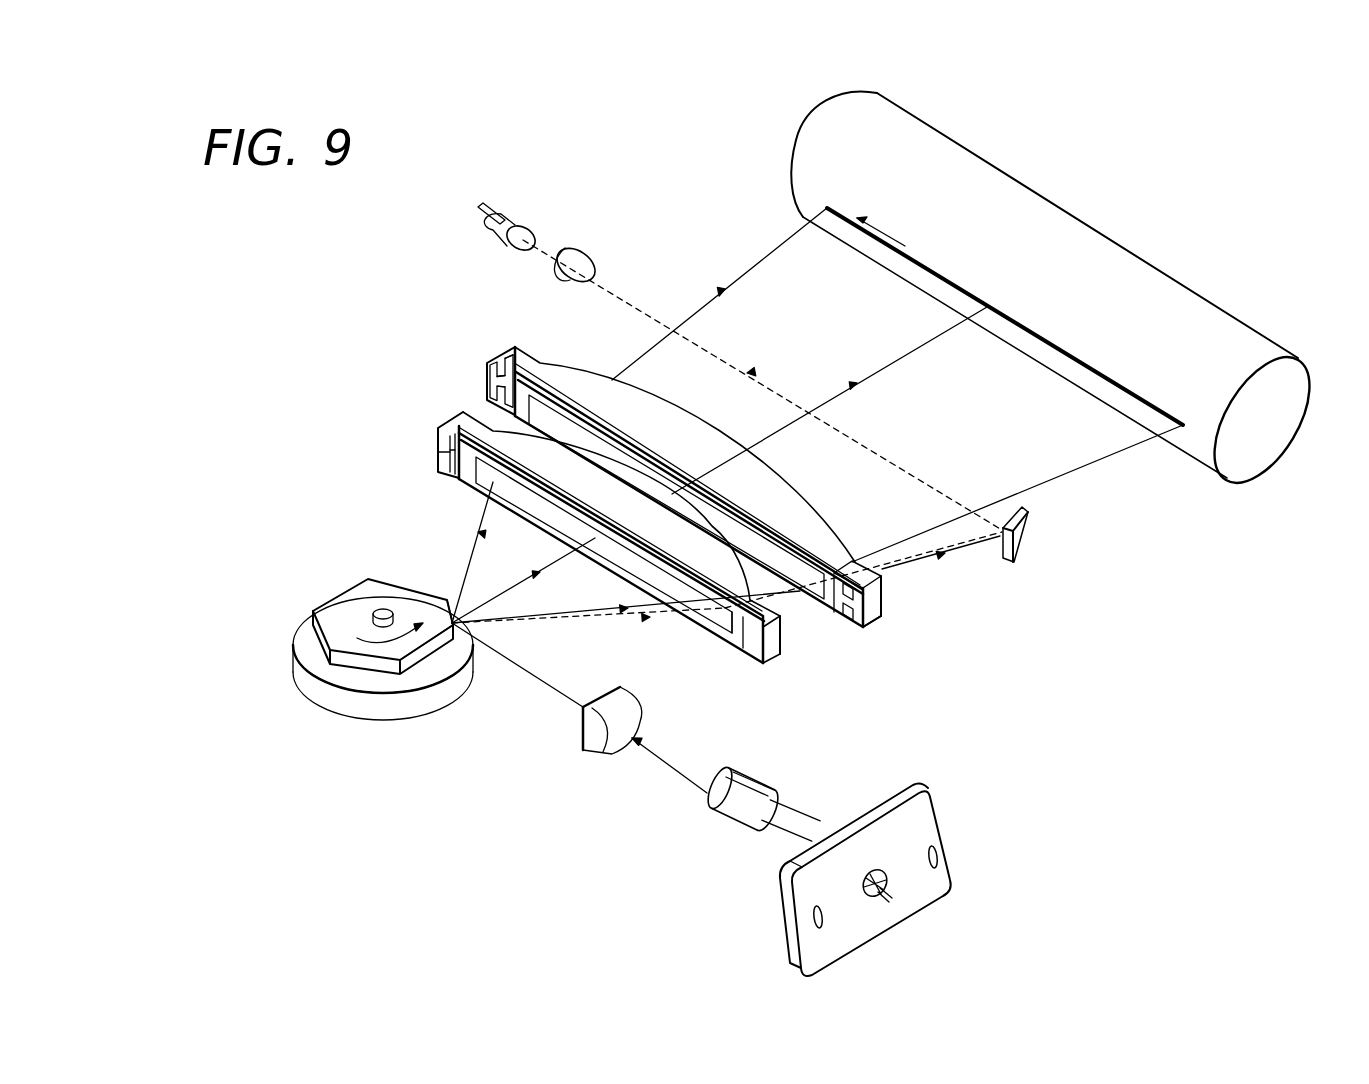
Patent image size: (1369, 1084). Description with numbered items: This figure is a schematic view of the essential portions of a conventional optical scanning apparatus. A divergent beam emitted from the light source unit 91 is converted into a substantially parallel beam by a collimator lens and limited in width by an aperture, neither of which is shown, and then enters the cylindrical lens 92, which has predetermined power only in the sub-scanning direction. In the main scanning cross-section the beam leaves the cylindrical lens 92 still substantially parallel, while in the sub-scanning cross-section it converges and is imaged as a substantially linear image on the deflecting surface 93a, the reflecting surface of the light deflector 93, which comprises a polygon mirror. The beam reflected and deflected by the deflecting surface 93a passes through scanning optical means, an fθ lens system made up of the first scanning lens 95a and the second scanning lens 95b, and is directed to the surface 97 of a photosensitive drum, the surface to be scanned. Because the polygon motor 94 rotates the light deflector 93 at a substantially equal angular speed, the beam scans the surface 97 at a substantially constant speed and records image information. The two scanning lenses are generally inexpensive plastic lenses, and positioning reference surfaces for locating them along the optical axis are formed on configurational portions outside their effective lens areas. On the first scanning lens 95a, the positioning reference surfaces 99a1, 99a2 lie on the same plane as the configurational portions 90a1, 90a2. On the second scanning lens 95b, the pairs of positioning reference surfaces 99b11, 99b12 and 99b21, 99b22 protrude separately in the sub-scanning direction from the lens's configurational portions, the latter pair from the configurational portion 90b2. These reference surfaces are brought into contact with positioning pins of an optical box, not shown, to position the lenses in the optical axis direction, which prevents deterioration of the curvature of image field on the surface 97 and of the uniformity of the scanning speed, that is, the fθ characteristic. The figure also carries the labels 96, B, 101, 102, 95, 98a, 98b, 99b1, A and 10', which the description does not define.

The surface of a photosensitive drum 97 is at (1010, 193).
The laser beam 96 is at (903, 334).
The scanning direction B is at (885, 232).
The beam detect sensor 101 is at (522, 222).
The sensor lens 102 is at (588, 257).
The lens unit 95 is at (301, 263).
The first scanning lens 95a is at (440, 417).
The second scanning lens 95b is at (483, 360).
The first cylindrical lens 98a is at (632, 585).
The second cylindrical lens 98b is at (543, 407).
The positioning reference surface 99a1 is at (772, 648).
The positioning reference surface 99a2 is at (450, 457).
The engaging portion of second holder 99b1 is at (838, 608).
The positioning reference surface 99b11 is at (883, 603).
The positioning reference surface 99b12 is at (868, 626).
The positioning reference surface 99b21 is at (498, 366).
The positioning reference surface 99b22 is at (510, 376).
The configurational portion 90a1 is at (735, 642).
The configurational portion 90a2 is at (463, 477).
The configurational portion 90b2 is at (490, 390).
The light deflector 93 is at (340, 607).
The deflecting surface 93a is at (450, 600).
The polygon motor 94 is at (360, 707).
The rotation direction A is at (403, 641).
The cylindrical lens 92 is at (583, 740).
The light source unit 91 is at (893, 882).
The detecting element 10' is at (1050, 535).